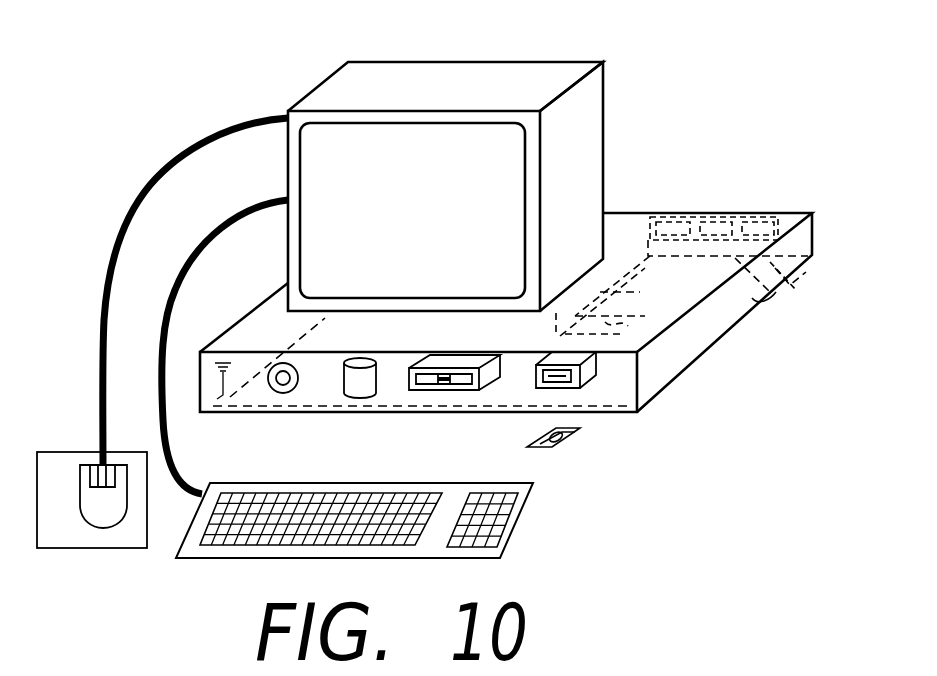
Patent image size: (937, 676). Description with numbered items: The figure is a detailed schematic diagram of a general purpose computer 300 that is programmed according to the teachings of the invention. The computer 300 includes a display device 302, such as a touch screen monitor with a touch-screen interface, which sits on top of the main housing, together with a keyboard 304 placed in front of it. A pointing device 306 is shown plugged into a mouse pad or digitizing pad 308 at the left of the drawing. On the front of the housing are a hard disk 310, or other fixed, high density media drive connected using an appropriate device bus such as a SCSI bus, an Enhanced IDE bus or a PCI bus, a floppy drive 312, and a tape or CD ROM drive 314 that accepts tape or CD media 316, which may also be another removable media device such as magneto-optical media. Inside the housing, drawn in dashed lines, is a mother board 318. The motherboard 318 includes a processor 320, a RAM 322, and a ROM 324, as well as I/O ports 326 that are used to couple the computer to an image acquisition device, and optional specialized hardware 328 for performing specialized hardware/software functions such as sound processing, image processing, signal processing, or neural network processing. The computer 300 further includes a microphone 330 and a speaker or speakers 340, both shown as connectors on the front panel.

The general purpose computer 300 is at (755, 537).
The display device 302 is at (603, 106).
The keyboard 304 is at (533, 487).
The pointing device 306 is at (100, 528).
The mouse pad or digitizing pad 308 is at (52, 452).
The hard disk 310 is at (360, 398).
The floppy drive 312 is at (438, 392).
The tape or CD ROM drive 314 is at (585, 380).
The tape or CD media 316 is at (580, 441).
The mother board 318 is at (800, 262).
The processor 320 is at (626, 330).
The RAM 322 is at (686, 285).
The ROM 324 is at (768, 296).
The I/O ports 326 is at (730, 213).
The specialized hardware 328 is at (655, 222).
The microphone 330 is at (223, 395).
The speaker 340 is at (283, 393).